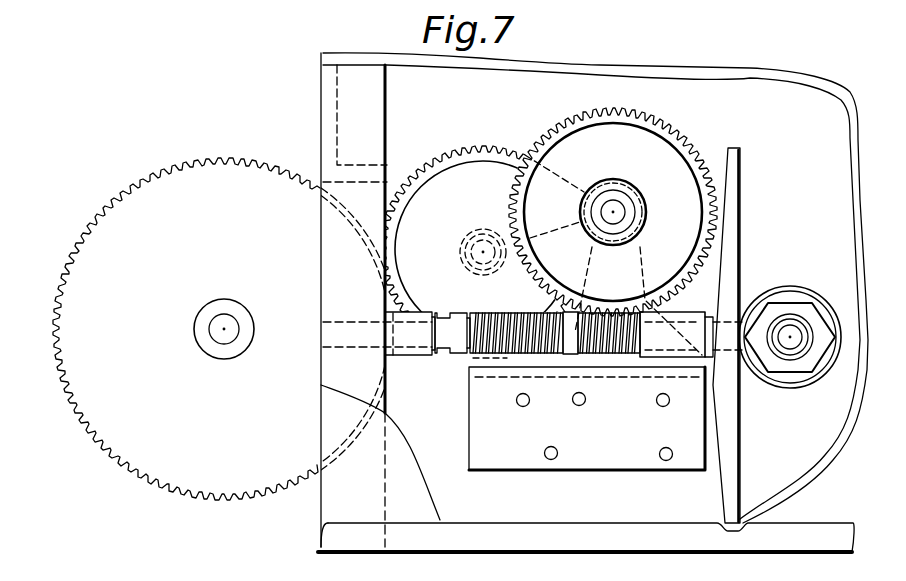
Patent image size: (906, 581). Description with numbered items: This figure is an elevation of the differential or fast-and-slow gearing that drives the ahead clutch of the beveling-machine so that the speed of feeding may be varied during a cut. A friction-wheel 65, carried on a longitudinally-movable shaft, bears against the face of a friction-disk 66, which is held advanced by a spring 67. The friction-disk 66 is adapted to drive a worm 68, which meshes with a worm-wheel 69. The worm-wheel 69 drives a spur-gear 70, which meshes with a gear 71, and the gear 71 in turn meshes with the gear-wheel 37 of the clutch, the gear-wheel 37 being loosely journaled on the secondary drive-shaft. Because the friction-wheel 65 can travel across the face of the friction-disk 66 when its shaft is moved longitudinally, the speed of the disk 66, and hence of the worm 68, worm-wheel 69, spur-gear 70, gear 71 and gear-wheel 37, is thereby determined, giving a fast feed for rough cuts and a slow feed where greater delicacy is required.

The gear-wheel 37 is at (224, 329).
The friction-wheel 65 is at (790, 390).
The friction-disk 66 is at (740, 195).
The spring 67 is at (549, 357).
The worm 68 is at (634, 357).
The worm-wheel 69 is at (613, 212).
The spur-gear 70 is at (633, 192).
The gear 71 is at (483, 237).